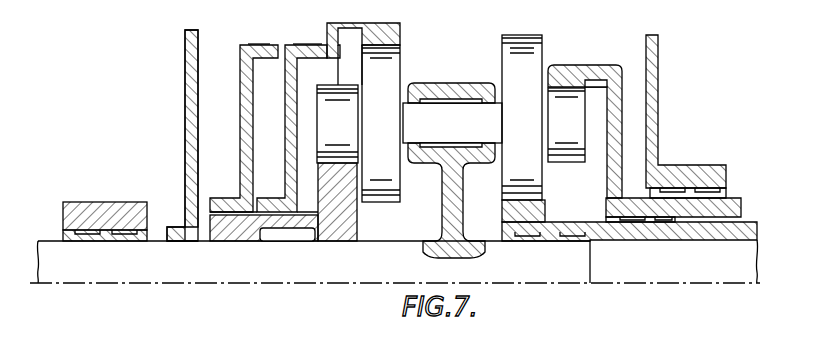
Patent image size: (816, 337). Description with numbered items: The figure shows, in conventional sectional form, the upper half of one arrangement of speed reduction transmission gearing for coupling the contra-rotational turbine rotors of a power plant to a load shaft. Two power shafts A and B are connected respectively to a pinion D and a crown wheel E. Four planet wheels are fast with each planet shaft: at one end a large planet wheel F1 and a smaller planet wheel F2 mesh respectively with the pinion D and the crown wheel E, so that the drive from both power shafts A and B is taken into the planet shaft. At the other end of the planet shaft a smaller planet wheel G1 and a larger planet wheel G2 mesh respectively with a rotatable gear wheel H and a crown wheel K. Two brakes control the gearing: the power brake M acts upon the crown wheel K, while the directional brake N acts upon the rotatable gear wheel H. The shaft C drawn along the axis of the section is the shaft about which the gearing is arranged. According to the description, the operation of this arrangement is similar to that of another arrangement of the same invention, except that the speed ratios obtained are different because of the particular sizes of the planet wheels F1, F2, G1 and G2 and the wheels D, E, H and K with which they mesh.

The power shaft A is at (751, 232).
The power shaft B is at (731, 205).
The shaft C is at (214, 273).
The pinion D is at (530, 207).
The crown wheel E is at (565, 78).
The large planet wheel F1 is at (533, 181).
The smaller planet wheel F2 is at (580, 125).
The smaller planet wheel G1 is at (339, 104).
The larger planet wheel G2 is at (381, 123).
The rotatable gear wheel H is at (344, 212).
The crown wheel K is at (400, 40).
The power brake M is at (292, 116).
The directional brake N is at (244, 116).